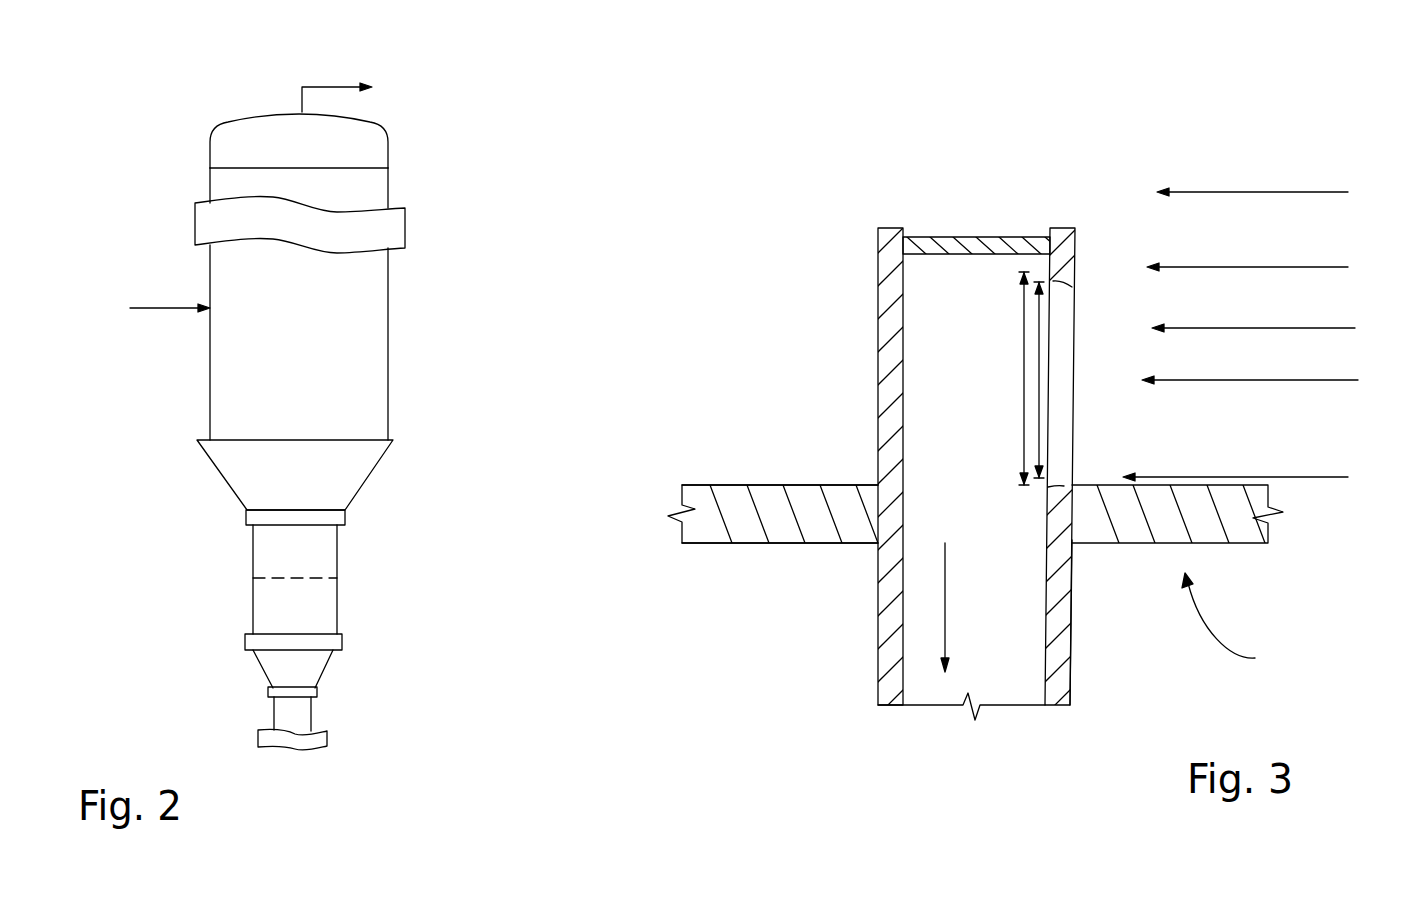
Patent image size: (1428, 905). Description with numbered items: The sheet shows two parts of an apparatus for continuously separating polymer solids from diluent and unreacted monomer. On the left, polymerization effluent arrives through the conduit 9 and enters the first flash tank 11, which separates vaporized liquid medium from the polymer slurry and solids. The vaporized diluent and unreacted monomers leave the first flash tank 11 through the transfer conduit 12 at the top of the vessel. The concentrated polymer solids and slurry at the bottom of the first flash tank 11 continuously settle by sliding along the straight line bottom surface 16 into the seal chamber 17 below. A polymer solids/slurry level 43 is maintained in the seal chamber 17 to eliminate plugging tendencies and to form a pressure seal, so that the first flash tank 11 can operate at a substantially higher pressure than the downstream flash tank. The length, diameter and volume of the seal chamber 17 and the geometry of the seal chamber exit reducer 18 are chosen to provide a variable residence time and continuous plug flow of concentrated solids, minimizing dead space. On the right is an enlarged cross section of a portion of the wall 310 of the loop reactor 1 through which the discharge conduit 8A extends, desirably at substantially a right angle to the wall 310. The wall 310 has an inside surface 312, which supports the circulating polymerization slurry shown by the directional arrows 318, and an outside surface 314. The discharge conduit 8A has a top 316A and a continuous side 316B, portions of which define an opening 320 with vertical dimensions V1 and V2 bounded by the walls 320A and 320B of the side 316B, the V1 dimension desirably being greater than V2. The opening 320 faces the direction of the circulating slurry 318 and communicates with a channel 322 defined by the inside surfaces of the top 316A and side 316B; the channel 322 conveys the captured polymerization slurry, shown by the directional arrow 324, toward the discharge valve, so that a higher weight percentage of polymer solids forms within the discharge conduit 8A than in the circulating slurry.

In FIG. 2, the conduit 9 is at (170, 291).
In FIG. 2, the first flash tank 11 is at (388, 277).
In FIG. 2, the transfer conduit 12 is at (337, 81).
In FIG. 2, the straight line bottom surface 16 is at (360, 465).
In FIG. 2, the seal chamber 17 is at (337, 557).
In FIG. 2, the seal chamber exit reducer 18 is at (312, 668).
In FIG. 2, the polymer solids/slurry level 43 is at (274, 578).
In FIG. 3, the loop reactor 1 is at (1232, 625).
In FIG. 3, the discharge conduit 8A is at (1071, 663).
In FIG. 3, the wall 310 is at (706, 543).
In FIG. 3, the inside surface 312 is at (773, 485).
In FIG. 3, the outside surface 314 is at (818, 543).
In FIG. 3, the top 316A is at (965, 237).
In FIG. 3, the side 316B is at (878, 283).
In FIG. 3, the circulating polymerization slurry 318 is at (1243, 192).
In FIG. 3, the opening 320 is at (1060, 347).
In FIG. 3, the wall 320A is at (1072, 287).
In FIG. 3, the wall 320B is at (1064, 486).
In FIG. 3, the channel 322 is at (978, 503).
In FIG. 3, the captured polymerization slurry 324 is at (948, 602).
In FIG. 3, the vertical opening dimension v1 V1 is at (1022, 352).
In FIG. 3, the vertical opening dimension v2 V2 is at (1040, 393).